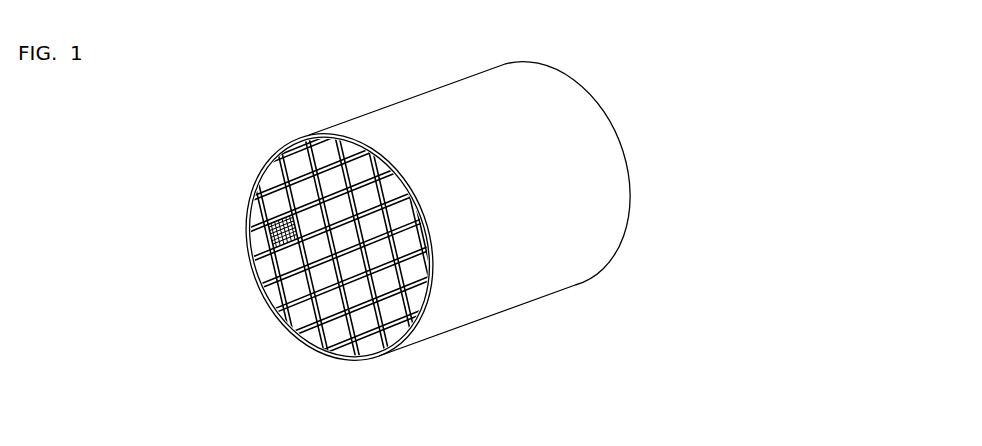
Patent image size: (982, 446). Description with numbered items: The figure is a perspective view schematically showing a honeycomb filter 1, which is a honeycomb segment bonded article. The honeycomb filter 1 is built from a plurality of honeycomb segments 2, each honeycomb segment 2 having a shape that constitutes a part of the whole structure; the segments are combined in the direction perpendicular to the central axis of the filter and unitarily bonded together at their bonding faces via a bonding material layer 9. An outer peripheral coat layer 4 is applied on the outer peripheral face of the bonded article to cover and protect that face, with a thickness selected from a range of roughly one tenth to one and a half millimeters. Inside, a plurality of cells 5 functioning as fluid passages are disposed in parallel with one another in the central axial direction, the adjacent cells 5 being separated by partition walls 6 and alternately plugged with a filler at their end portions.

The honeycomb filter 1 is at (410, 223).
The honeycomb segment 2 is at (297, 269).
The outer peripheral coat layer 4 is at (245, 246).
The cell 5 is at (281, 214).
The partition wall 6 is at (267, 218).
The bonding material layer 9 is at (410, 257).